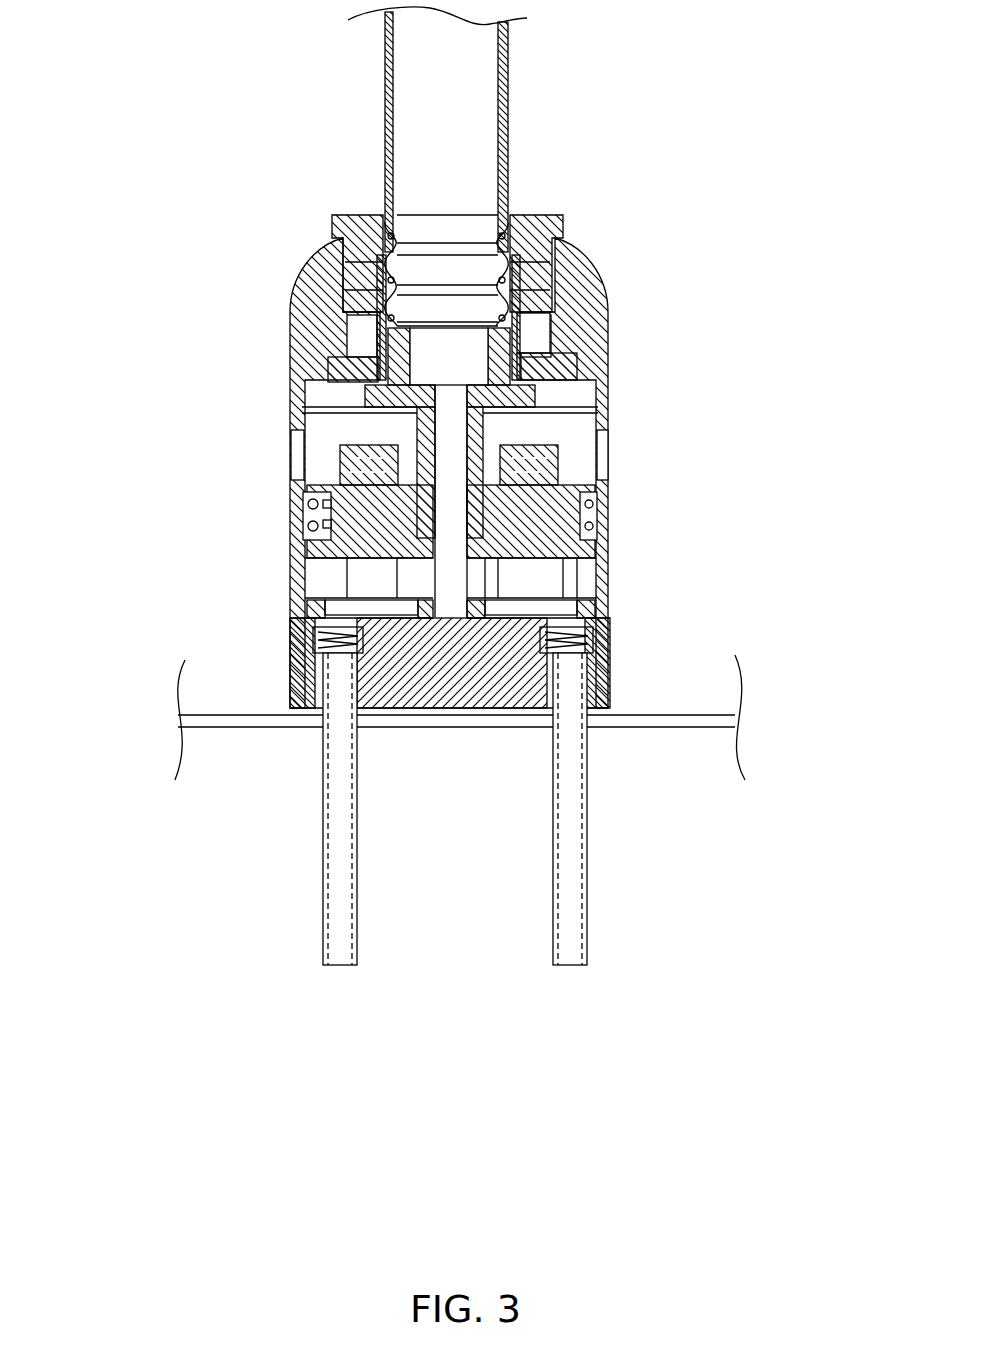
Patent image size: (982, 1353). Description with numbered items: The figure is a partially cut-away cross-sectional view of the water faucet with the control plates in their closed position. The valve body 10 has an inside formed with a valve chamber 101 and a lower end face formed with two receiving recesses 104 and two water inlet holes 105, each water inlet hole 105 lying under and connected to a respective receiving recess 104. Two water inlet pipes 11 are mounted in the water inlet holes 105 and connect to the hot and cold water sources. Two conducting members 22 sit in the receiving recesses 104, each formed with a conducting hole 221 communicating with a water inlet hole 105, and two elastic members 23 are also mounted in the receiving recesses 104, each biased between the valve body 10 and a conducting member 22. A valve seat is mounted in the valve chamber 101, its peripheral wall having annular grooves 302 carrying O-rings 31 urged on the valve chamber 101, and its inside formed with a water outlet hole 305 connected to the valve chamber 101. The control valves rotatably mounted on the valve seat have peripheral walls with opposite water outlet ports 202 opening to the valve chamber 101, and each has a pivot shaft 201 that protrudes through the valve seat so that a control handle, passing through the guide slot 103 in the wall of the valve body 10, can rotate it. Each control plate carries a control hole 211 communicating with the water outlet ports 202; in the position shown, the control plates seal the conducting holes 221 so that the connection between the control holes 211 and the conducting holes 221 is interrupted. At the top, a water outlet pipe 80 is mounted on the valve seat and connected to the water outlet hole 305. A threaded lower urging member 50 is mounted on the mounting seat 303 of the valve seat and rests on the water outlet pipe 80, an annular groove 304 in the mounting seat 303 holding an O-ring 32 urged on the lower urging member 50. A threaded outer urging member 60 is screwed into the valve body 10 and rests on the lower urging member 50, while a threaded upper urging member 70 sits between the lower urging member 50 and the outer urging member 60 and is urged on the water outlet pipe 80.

The water outlet pipe 80 is at (510, 118).
The upper urging member 70 is at (568, 212).
The outer urging member 60 is at (600, 278).
The lower urging member 50 is at (532, 335).
The water outlet hole 305 is at (455, 363).
The annular groove 304 is at (358, 357).
The O-ring 32 is at (378, 378).
The pivot shaft 201 is at (548, 440).
The mounting seat 303 is at (412, 426).
The guide slot 103 is at (600, 450).
The valve body 10 is at (615, 517).
The annular grooves 302 is at (347, 521).
The O-rings 31 is at (300, 498).
The valve chamber 101 is at (600, 552).
The water outlet ports 202 is at (455, 577).
The control hole 211 is at (407, 617).
The receiving recesses 104 is at (343, 663).
The conducting members 22 is at (298, 643).
The conducting hole 221 is at (293, 612).
The water inlet holes 105 is at (294, 668).
The elastic members 23 is at (611, 650).
The water inlet pipes 11 is at (320, 890).